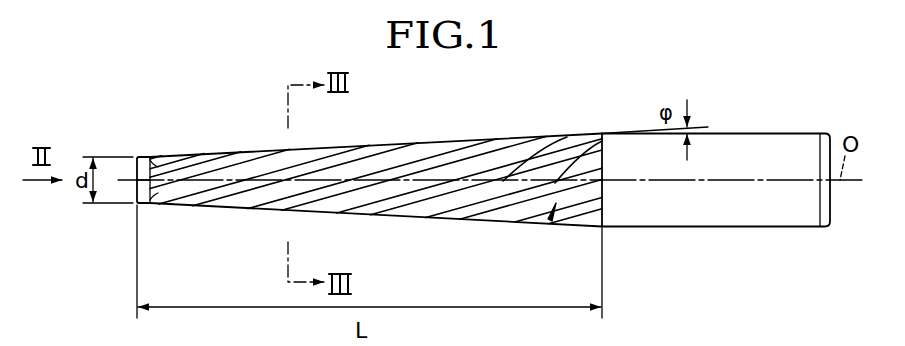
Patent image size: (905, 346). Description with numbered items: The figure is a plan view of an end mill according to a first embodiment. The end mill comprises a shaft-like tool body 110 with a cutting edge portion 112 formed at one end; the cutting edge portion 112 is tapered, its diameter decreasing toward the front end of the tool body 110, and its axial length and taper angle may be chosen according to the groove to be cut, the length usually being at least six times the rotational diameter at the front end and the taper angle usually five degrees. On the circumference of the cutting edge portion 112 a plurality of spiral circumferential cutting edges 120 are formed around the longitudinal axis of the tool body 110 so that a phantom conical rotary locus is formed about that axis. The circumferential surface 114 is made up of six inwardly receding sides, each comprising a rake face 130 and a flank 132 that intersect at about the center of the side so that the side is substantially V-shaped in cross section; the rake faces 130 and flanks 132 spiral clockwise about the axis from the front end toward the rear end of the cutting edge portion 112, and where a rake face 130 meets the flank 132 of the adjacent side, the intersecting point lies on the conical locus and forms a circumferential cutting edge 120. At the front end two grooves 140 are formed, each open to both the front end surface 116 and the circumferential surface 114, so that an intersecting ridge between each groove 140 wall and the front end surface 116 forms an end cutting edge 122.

The tool body 110 is at (725, 155).
The cutting edge portion 112 is at (545, 224).
The circumferential surface 114 is at (545, 148).
The front end surface 116 is at (137, 178).
The circumferential cutting edges 120 is at (395, 170).
The end cutting edges 122 is at (137, 196).
The rake face 130 is at (398, 207).
The flank 132 is at (383, 214).
The grooves 140 is at (149, 157).